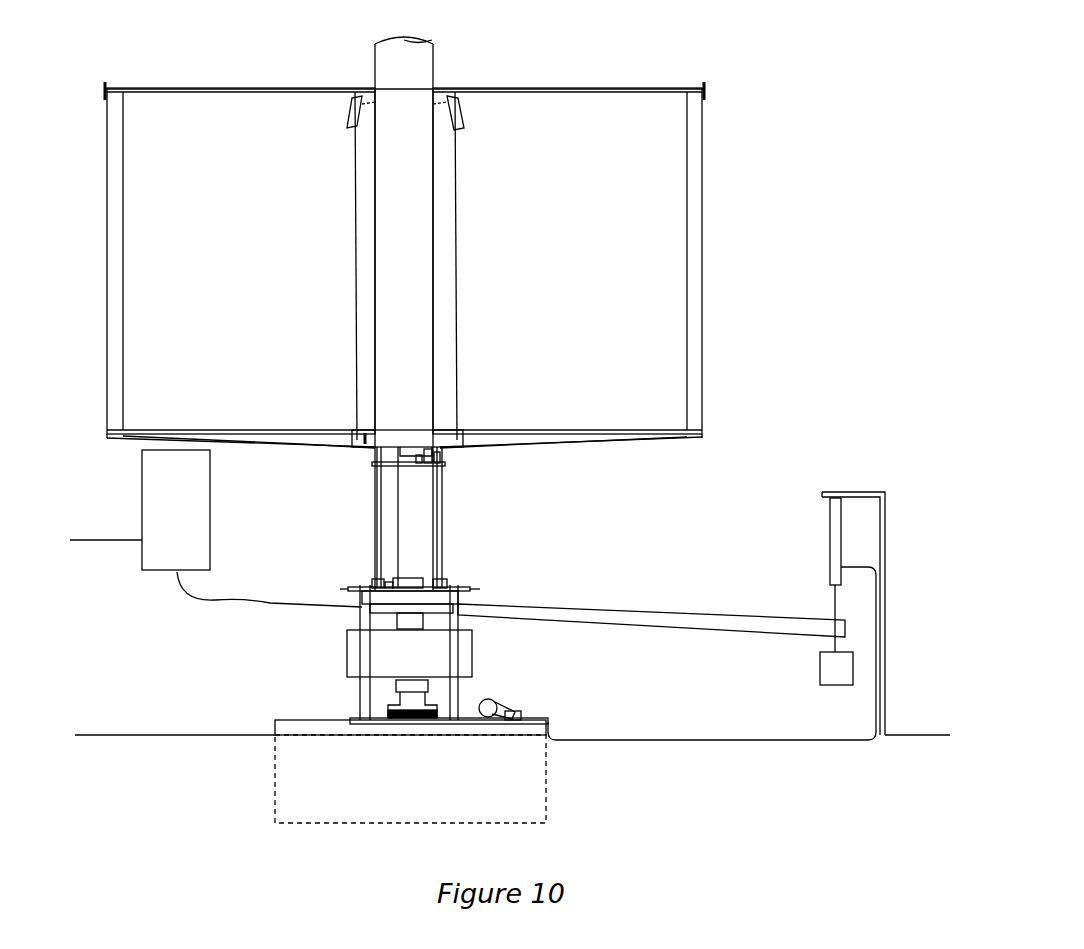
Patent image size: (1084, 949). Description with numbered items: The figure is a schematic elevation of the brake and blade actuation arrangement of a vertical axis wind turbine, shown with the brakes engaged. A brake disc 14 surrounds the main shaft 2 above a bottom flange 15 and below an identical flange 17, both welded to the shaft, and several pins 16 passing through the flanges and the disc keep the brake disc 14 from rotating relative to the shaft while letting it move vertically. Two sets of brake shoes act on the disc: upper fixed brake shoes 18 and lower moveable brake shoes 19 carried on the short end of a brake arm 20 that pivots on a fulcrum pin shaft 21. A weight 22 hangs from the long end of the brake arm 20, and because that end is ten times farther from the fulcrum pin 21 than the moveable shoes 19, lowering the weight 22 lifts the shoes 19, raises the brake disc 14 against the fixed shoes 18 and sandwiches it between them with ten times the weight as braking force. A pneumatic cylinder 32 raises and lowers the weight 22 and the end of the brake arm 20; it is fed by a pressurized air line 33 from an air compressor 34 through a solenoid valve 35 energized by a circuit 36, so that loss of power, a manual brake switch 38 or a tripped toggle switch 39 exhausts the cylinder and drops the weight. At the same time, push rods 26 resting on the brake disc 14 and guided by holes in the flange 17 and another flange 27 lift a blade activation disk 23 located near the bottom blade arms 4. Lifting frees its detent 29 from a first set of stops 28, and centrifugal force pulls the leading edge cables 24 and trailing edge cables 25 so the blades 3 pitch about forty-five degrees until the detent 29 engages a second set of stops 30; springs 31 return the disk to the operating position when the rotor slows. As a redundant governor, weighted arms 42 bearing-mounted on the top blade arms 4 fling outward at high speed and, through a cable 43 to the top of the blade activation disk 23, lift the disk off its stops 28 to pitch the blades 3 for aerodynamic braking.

The main shaft 2 is at (384, 80).
The blades 3 is at (112, 252).
The blade arms 4 is at (205, 88).
The brake disc 14 is at (348, 589).
The bottom flange 15 is at (370, 608).
The pins 16 is at (378, 582).
The flange 17 is at (386, 584).
The upper fixed brake shoes 18 is at (413, 580).
The lower moveable brake shoes 19 is at (412, 606).
The brake arm 20 is at (582, 607).
The fulcrum pin shaft 21 is at (452, 614).
The weight 22 is at (830, 680).
The blade activation disk 23 is at (366, 450).
The leading edge blade pitch cables 24 is at (530, 448).
The trailing edge blade pitch cables 25 is at (276, 448).
The push rods 26 is at (376, 476).
The flange 27 is at (438, 464).
The first set of stops 28 is at (424, 468).
The detent 29 is at (440, 457).
The second set of stops 30 is at (430, 466).
The springs 31 is at (396, 440).
The pneumatic cylinder 32 is at (830, 530).
The pressurized air supply line 33 is at (500, 724).
The air compressor 34 is at (490, 698).
The solenoid valve 35 is at (522, 714).
The solenoid circuit 36 is at (270, 600).
The brake switch 38 is at (205, 620).
The toggle switch 39 is at (362, 598).
The weighted arms 42 is at (350, 122).
The cable 43 is at (355, 212).